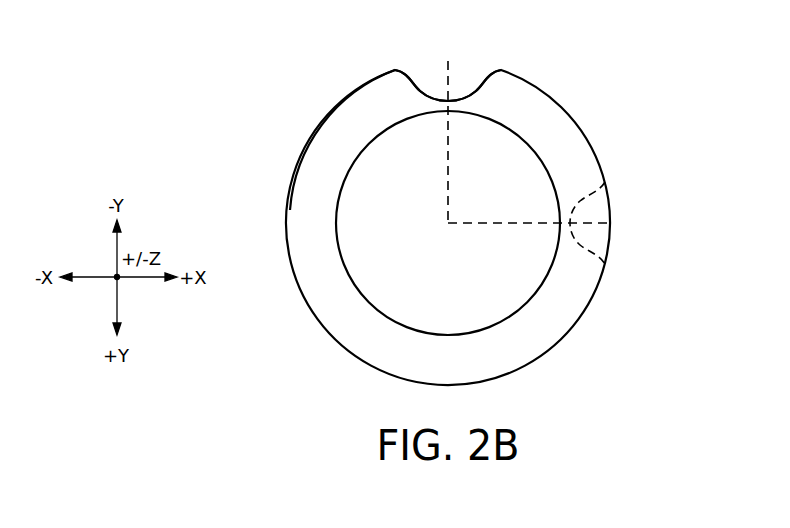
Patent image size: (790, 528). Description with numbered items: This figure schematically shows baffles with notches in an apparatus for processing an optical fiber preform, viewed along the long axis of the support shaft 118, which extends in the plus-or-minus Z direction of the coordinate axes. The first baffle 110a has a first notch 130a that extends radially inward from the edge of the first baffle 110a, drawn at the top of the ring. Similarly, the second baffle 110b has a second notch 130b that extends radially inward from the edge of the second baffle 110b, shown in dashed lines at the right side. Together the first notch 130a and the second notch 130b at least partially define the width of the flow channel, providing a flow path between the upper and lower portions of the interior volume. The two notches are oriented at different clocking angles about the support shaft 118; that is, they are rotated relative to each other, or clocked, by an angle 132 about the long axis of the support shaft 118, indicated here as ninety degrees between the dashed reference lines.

The first baffle 110a is at (423, 62).
The second baffle 110b is at (572, 126).
The first notch 130a is at (604, 200).
The second notch 130b is at (463, 78).
The angle 132 is at (530, 212).
The support shaft 118 is at (467, 278).